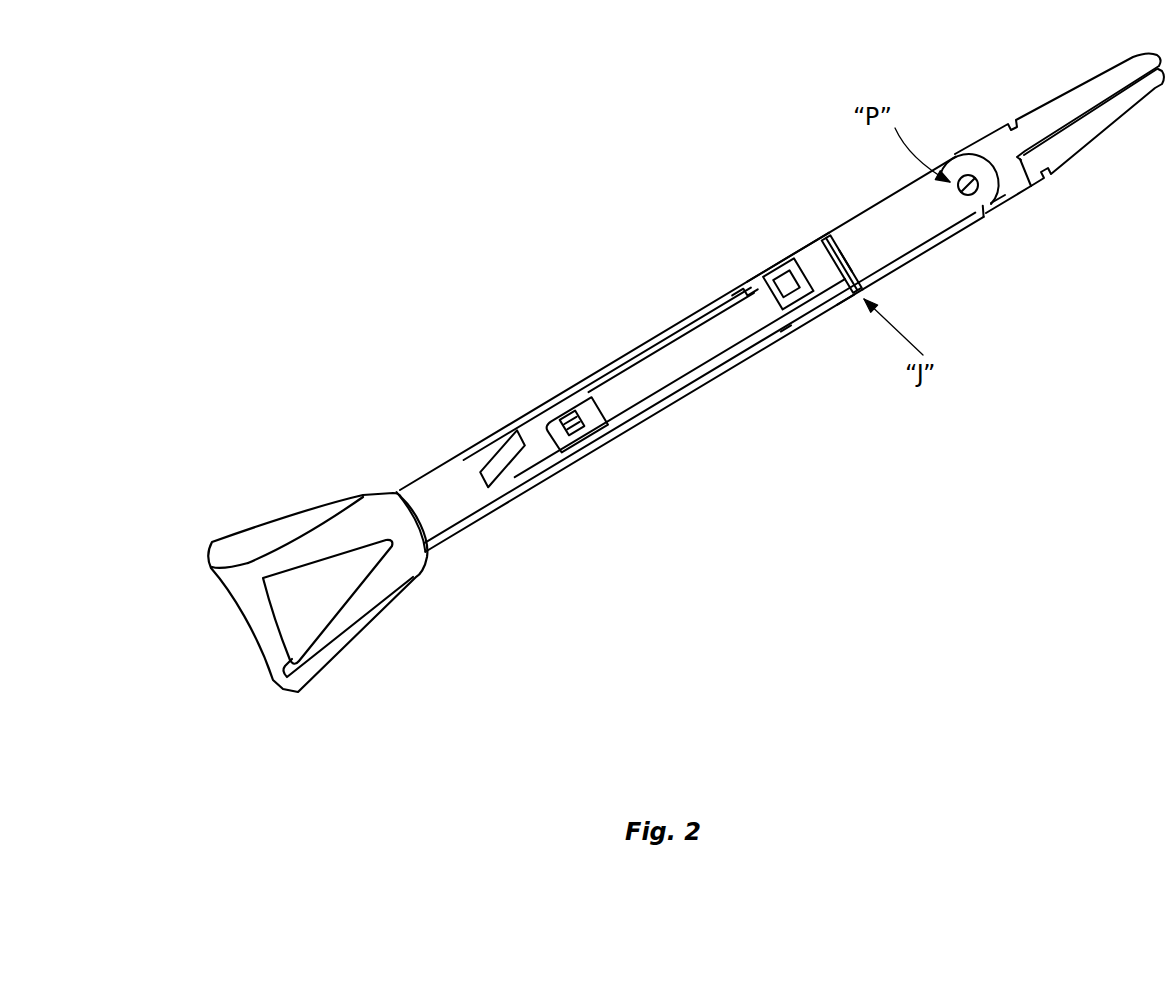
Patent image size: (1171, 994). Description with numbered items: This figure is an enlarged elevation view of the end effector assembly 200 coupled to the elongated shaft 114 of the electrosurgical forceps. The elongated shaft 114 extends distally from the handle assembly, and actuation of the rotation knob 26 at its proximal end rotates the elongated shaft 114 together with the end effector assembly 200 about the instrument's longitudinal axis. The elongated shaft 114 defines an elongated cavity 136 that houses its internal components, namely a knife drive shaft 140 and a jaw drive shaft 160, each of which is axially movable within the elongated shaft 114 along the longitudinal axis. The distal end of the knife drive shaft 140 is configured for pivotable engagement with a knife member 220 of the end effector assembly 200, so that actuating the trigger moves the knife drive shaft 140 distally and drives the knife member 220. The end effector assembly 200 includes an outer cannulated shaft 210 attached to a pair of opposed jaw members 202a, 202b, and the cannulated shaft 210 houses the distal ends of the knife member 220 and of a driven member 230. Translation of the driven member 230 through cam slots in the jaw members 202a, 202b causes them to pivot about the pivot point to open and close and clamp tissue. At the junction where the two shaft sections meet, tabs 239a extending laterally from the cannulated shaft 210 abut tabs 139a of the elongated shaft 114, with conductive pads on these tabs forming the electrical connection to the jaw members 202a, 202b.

The rotation knob 26 is at (247, 540).
The elongated shaft 114 is at (608, 335).
The elongated cavity 136 is at (750, 277).
The tab 139a is at (840, 293).
The knife drive shaft 140 is at (500, 466).
The jaw drive shaft 160 is at (672, 370).
The end effector assembly 200 is at (943, 133).
The jaw member 202a is at (1060, 107).
The jaw member 202b is at (1087, 142).
The outer cannulated shaft 210 is at (930, 228).
The knife member 220 is at (592, 427).
The driven member 230 is at (810, 290).
The tab 239a is at (850, 258).